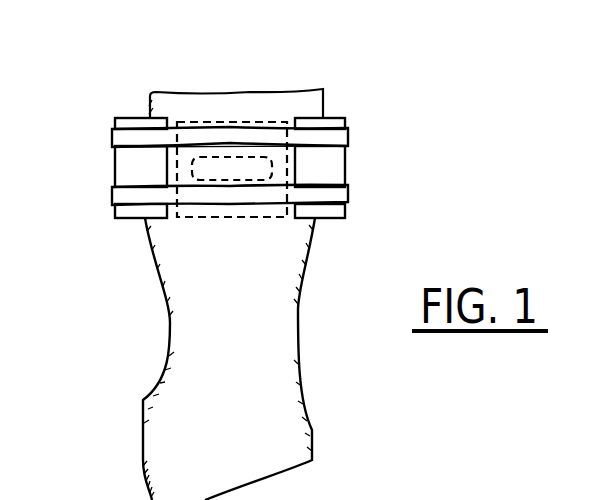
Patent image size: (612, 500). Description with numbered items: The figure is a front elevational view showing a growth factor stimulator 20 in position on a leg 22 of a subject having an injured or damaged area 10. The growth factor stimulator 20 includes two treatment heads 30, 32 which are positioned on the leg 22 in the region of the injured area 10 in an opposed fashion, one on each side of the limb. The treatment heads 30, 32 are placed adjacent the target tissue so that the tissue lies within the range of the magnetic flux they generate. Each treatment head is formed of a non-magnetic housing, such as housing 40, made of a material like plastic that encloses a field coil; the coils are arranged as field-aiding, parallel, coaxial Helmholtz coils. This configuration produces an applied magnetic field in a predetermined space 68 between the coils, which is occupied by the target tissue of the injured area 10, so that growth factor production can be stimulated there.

The injured area 10 is at (268, 170).
The growth factor stimulator 20 is at (355, 148).
The leg 22 is at (144, 415).
The treatment head 30 is at (112, 173).
The treatment head 32 is at (350, 178).
The housing 40 is at (347, 175).
The predetermined space 68 is at (185, 155).